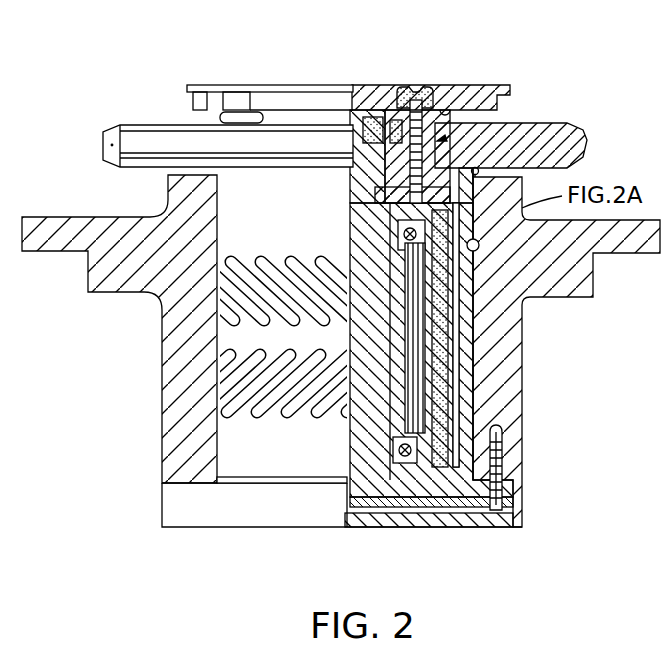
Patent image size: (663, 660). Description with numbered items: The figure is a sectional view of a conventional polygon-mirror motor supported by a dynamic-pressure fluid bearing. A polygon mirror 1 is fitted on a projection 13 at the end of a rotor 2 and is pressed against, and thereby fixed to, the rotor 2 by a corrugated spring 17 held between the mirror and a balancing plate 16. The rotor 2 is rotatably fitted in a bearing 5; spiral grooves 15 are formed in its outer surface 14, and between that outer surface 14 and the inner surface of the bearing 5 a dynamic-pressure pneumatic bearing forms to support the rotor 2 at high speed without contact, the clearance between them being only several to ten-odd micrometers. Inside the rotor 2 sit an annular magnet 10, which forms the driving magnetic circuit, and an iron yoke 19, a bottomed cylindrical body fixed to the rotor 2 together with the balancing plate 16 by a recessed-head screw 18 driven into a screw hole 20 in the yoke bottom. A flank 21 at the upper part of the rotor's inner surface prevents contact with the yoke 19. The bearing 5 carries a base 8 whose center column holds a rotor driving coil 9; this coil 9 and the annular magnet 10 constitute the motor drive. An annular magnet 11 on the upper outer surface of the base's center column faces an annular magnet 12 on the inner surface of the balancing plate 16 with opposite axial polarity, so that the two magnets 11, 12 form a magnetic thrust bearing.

The polygon mirror 1 is at (573, 137).
The rotor 2 is at (212, 194).
The bearing 5 is at (490, 385).
The base 8 is at (357, 437).
The rotor driving coil 9 is at (420, 400).
The annular magnet 10 is at (494, 433).
The annular magnet 11 is at (372, 128).
The annular magnet 12 is at (395, 130).
The projection 13 is at (440, 140).
The outer surface 14 is at (252, 451).
The spiral grooves 15 is at (237, 374).
The balancing plate 16 is at (493, 88).
The corrugated spring 17 is at (243, 117).
The screw 18 is at (417, 120).
The iron yoke 19 is at (487, 310).
The screw hole 20 is at (373, 190).
The flank 21 is at (479, 244).